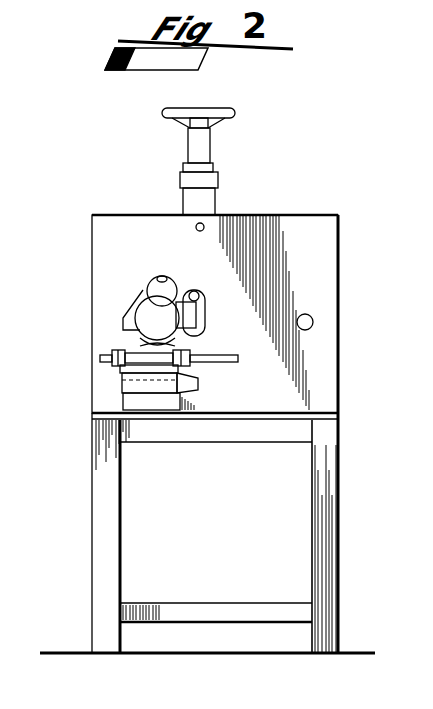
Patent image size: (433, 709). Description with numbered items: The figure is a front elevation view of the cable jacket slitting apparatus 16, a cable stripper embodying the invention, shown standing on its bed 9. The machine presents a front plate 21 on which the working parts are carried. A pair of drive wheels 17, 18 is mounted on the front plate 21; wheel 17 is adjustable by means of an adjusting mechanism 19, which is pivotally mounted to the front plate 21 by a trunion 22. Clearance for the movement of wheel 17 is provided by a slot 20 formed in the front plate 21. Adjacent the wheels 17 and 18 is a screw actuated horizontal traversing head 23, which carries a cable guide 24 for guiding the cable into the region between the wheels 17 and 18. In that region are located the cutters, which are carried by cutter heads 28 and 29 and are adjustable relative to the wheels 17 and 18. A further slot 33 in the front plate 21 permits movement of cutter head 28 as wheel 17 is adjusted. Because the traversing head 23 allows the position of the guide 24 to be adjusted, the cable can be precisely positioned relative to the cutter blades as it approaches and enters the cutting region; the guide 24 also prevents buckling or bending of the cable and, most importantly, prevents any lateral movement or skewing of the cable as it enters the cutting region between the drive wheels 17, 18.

The bed 9 is at (288, 420).
The cable jacket slitting apparatus 16 is at (303, 150).
The drive wheel 17 is at (152, 307).
The drive wheel 18 is at (200, 385).
The adjusting mechanism 19 is at (190, 142).
The slot 20 is at (160, 277).
The front plate 21 is at (300, 233).
The trunion 22 is at (201, 222).
The horizontal traversing head 23 is at (141, 346).
The cable guide 24 is at (215, 350).
The cutter head 28 is at (122, 312).
The cutter head 29 is at (118, 387).
The slot 33 is at (197, 296).